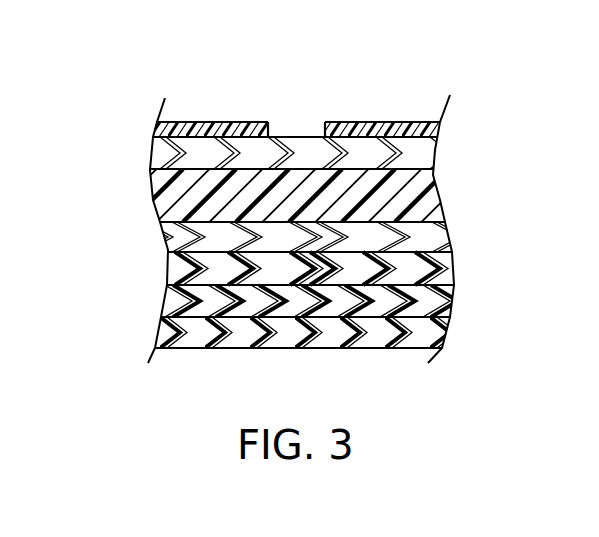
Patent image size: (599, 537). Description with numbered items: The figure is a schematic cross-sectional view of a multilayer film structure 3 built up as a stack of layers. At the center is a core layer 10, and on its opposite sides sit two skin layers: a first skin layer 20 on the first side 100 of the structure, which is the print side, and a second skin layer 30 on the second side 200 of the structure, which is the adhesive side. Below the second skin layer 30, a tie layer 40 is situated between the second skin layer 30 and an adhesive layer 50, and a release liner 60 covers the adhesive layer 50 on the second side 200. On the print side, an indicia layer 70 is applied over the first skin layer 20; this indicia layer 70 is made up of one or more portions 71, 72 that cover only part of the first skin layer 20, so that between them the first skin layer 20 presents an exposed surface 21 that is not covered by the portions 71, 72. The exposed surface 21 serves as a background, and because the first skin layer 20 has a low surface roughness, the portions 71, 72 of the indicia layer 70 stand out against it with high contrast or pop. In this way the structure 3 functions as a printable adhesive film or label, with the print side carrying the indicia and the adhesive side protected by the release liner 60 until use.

The multilayer film structure 3 is at (109, 86).
The first side 100 is at (299, 98).
The second side 200 is at (371, 370).
The indicia layer 70 is at (440, 131).
The portion of the indicia layer 71 is at (218, 122).
The portion of the indicia layer 72 is at (400, 122).
The exposed surface 21 is at (310, 134).
The first skin layer 20 is at (432, 155).
The core layer 10 is at (437, 190).
The second skin layer 30 is at (447, 230).
The tie layer 40 is at (445, 270).
The adhesive layer 50 is at (445, 303).
The release liner 60 is at (447, 331).